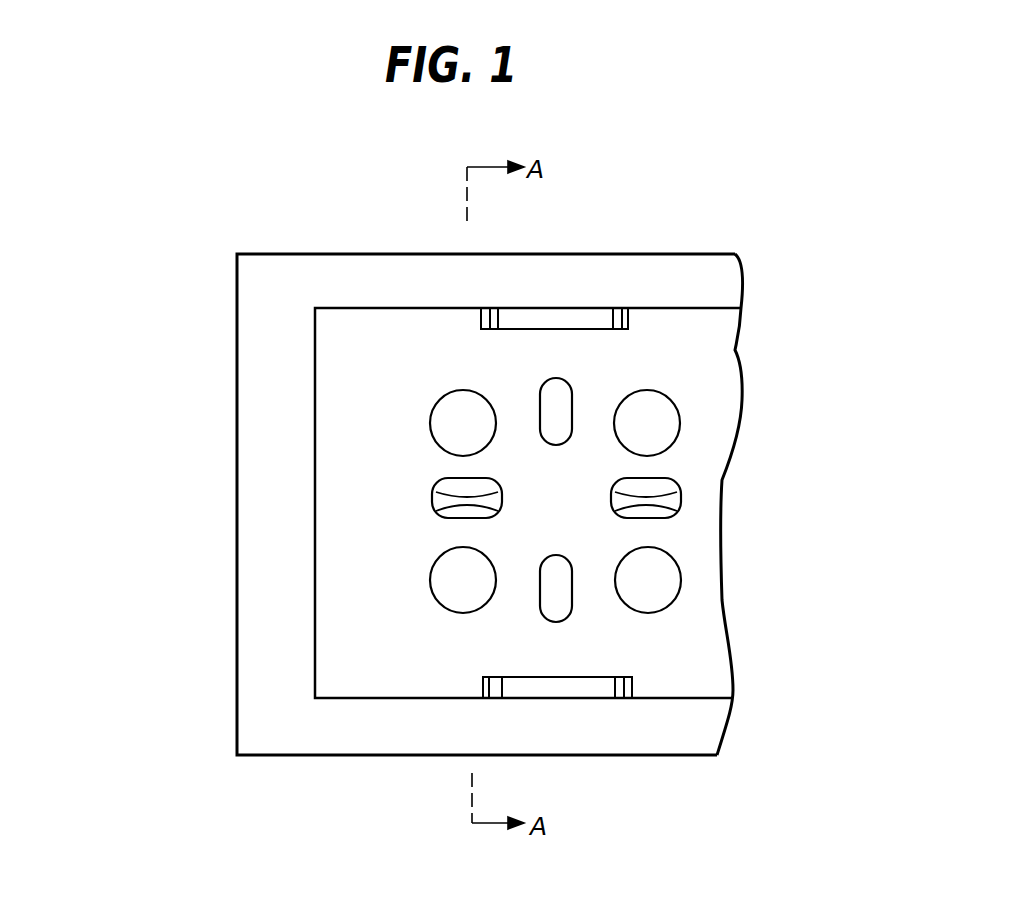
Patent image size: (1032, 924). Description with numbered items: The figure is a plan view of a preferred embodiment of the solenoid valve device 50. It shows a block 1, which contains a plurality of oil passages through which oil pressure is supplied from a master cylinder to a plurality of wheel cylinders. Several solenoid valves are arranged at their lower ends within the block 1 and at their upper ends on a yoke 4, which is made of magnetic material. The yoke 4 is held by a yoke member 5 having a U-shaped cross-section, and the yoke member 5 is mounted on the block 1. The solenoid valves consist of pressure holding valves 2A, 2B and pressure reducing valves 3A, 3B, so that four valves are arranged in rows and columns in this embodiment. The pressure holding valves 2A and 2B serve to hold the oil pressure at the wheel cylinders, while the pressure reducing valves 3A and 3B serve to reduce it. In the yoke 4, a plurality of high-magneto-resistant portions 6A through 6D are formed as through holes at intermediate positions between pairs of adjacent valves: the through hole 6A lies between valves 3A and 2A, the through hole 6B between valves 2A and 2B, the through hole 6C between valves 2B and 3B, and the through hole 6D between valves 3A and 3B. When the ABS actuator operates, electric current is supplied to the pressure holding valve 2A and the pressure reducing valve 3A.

The block 1 is at (255, 262).
The solenoid valve device 50 is at (588, 238).
The yoke 4 is at (645, 642).
The yoke member 5 is at (603, 315).
The pressure reducing valve 3A is at (430, 412).
The pressure reducing valve 3B is at (678, 413).
The pressure holding valve 2A is at (430, 583).
The pressure holding valve 2B is at (681, 590).
The through hole 6A is at (432, 494).
The through hole 6B is at (542, 597).
The through hole 6C is at (684, 497).
The through hole 6D is at (572, 388).